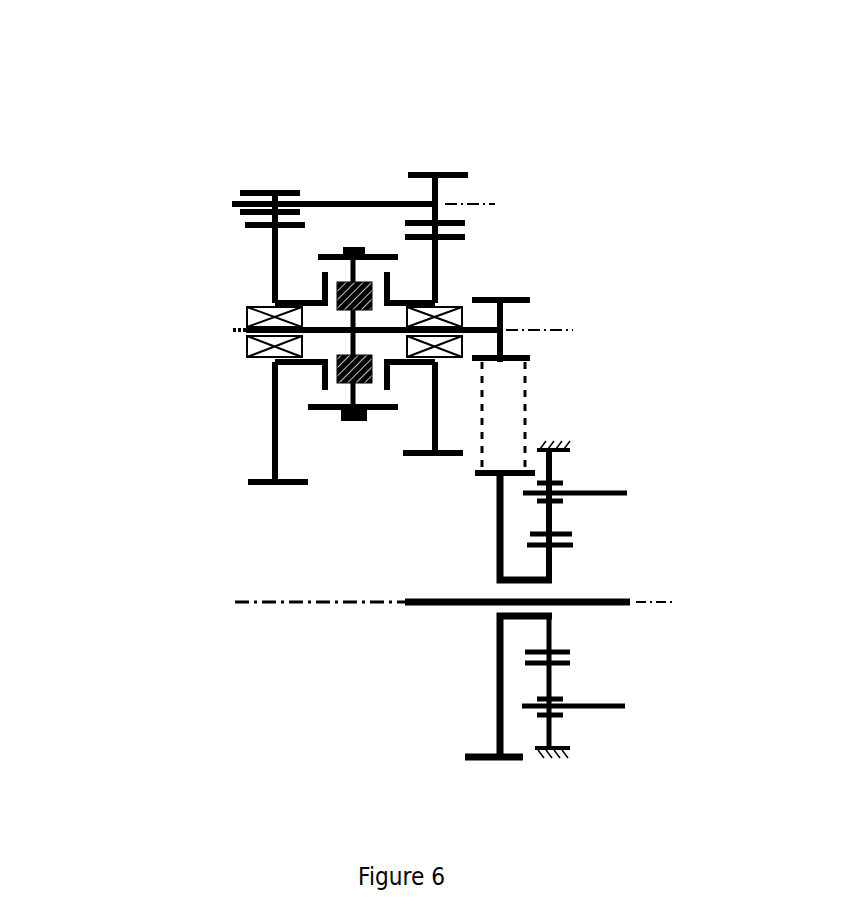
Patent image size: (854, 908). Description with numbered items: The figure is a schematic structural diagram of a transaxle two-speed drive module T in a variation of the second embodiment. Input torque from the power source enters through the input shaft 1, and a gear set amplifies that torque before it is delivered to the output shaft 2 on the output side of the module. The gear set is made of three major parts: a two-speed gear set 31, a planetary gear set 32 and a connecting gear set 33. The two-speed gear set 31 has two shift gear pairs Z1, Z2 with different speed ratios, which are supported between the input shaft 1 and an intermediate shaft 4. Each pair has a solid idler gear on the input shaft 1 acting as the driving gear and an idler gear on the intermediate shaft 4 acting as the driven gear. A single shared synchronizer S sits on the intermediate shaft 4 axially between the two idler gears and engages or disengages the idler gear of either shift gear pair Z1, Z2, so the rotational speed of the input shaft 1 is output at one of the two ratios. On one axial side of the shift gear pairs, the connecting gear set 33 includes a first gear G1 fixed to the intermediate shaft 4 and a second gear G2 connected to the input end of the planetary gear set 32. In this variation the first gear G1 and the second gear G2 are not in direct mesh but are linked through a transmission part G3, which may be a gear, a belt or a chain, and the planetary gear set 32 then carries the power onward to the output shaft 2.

The two-speed drive module T is at (215, 108).
The input shaft 1 is at (232, 204).
The two-speed gear set 31 is at (507, 70).
The shift gear pair Z1 is at (268, 192).
The synchronizer S is at (353, 247).
The shift gear pair Z2 is at (430, 197).
The intermediate shaft 4 is at (233, 330).
The connecting gear set 33 is at (290, 497).
The first gear G1 is at (476, 360).
The transmission part G3 is at (481, 452).
The second gear G2 is at (492, 520).
The planetary gear set 32 is at (596, 535).
The output shaft / differential 2 is at (595, 708).